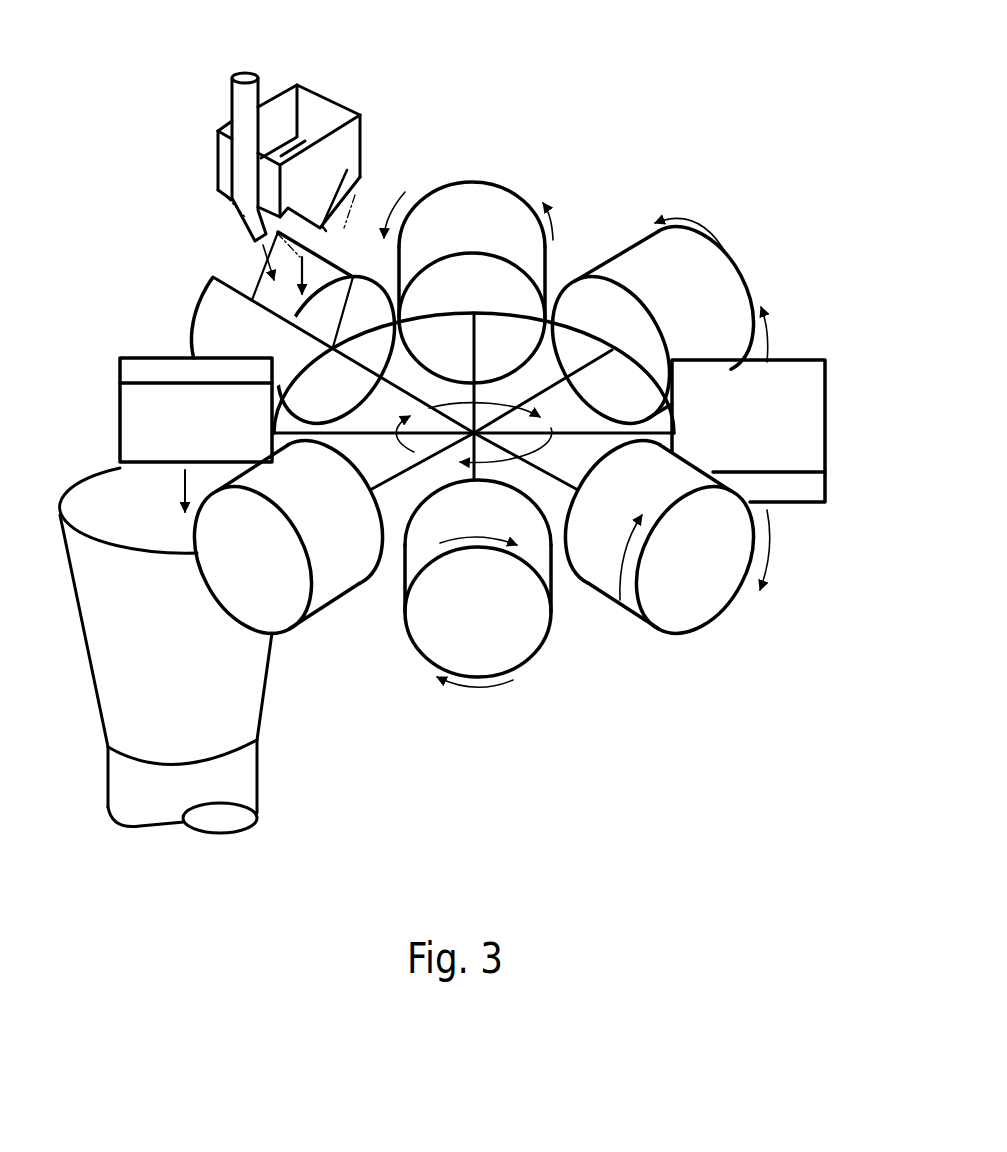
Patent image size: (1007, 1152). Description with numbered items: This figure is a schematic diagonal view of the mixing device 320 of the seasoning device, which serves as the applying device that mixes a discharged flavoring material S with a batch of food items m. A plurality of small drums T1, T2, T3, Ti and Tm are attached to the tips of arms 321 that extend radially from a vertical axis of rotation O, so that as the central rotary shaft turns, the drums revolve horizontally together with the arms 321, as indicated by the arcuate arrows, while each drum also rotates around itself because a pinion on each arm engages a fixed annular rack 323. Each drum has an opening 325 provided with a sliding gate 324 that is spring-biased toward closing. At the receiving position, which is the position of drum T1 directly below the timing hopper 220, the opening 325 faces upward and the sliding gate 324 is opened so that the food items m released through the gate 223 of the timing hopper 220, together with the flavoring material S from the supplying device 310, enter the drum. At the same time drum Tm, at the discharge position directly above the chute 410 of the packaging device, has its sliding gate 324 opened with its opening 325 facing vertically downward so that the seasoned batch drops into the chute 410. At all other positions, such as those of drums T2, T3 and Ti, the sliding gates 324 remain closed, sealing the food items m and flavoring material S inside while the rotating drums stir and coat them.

The supplying device 310 is at (232, 80).
The timing hopper 220 is at (327, 97).
The gate 223 is at (360, 197).
The mixing device 320 is at (684, 127).
The arms 321 is at (443, 382).
The fixed annular rack 323 is at (577, 332).
The sliding gate 324 is at (140, 425).
The opening 325 is at (238, 288).
The chute 410 is at (253, 688).
The drum T1 is at (213, 320).
The drum T2 is at (485, 203).
The drum T3 is at (710, 280).
The drum Ti is at (800, 397).
The drum Tm is at (128, 372).
The flavoring material S is at (262, 258).
The food items m is at (180, 481).
The axis of rotation O is at (474, 418).